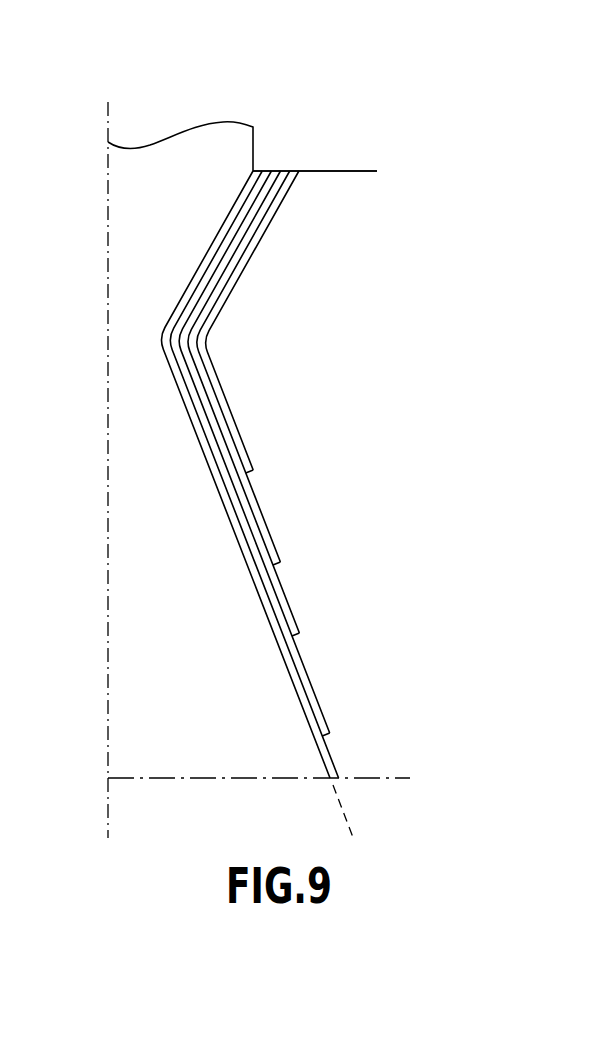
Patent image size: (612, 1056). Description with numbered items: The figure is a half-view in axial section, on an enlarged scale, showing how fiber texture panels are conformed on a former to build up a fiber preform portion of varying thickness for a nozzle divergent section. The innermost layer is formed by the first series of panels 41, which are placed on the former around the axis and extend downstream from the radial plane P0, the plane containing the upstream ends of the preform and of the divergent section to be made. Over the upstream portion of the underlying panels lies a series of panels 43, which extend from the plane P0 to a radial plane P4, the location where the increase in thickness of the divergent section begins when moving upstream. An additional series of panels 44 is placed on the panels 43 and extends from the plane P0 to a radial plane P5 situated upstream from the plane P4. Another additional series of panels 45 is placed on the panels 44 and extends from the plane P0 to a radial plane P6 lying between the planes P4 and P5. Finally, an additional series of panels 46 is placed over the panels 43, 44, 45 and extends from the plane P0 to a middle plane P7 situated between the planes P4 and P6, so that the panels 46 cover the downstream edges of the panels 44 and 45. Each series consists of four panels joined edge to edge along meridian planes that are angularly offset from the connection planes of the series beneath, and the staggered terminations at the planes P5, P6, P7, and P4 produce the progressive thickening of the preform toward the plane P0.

The first series of panels 41 is at (322, 756).
The panels 43 is at (310, 687).
The additional series of panels 44 is at (207, 418).
The additional series of panels 45 is at (250, 517).
The additional series of panels 46 is at (292, 603).
The radial plane P0 is at (324, 155).
The radial plane P4 is at (330, 735).
The radial plane P5 is at (236, 470).
The radial plane P6 is at (268, 559).
The middle plane P7 is at (296, 636).